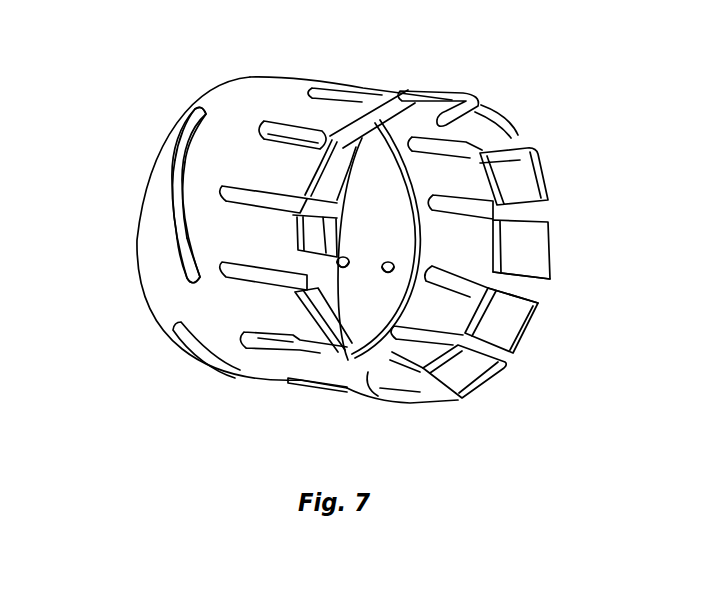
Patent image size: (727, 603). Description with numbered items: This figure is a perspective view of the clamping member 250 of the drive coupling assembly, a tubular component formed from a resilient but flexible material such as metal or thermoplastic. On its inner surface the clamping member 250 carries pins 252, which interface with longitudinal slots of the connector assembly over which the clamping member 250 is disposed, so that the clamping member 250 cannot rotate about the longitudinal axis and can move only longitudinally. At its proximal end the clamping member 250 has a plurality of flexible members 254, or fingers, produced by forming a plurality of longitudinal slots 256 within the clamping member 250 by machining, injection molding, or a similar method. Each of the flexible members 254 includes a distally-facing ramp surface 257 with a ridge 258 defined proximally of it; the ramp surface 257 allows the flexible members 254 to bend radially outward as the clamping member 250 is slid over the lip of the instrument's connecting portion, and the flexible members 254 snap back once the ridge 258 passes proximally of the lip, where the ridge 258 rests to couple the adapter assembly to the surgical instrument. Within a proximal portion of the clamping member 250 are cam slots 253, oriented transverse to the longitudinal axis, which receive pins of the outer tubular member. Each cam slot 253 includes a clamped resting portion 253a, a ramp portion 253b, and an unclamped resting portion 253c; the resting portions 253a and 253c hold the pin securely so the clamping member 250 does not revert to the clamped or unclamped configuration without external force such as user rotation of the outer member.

The clamping member 250 is at (270, 86).
The pins 252 is at (343, 270).
The cam slots 253 is at (175, 206).
The clamped resting portion 253a is at (183, 110).
The ramp portion 253b is at (174, 225).
The unclamped resting portion 253c is at (186, 273).
The flexible members 254 is at (480, 242).
The longitudinal slots 256 is at (482, 207).
The ramp surface 257 is at (543, 305).
The ridge 258 is at (500, 252).